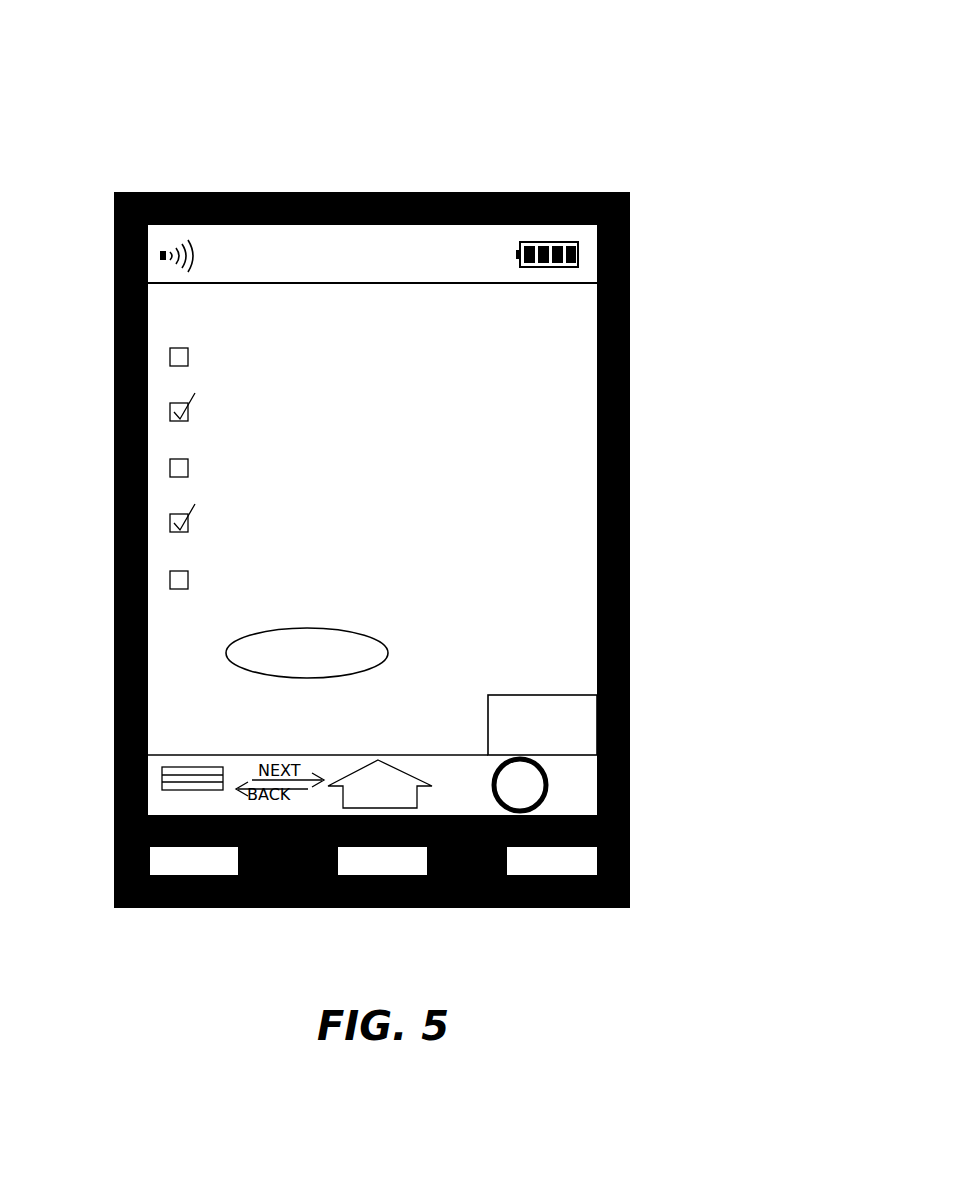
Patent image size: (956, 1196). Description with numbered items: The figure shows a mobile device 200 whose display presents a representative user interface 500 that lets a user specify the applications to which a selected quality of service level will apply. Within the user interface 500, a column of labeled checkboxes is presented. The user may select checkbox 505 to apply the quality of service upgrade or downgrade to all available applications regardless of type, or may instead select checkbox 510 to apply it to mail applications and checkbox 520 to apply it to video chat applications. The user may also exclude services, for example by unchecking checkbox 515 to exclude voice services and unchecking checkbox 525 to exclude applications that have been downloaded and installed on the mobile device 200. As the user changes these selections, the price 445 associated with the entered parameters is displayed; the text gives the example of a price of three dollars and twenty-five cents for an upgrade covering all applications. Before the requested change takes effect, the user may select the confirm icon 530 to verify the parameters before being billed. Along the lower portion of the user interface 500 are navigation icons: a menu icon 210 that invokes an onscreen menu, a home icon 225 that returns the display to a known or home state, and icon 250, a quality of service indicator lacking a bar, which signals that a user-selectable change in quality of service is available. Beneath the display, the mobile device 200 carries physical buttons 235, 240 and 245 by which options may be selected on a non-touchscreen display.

The mobile device 200 is at (648, 126).
The user interface 500 is at (582, 325).
The checkbox 505 is at (170, 363).
The checkbox 510 is at (170, 418).
The checkbox 515 is at (170, 474).
The checkbox 520 is at (170, 529).
The checkbox 525 is at (170, 586).
The confirm icon 530 is at (214, 646).
The menu icon 210 is at (182, 752).
The home icon 225 is at (412, 764).
The price 445 is at (583, 728).
The icon 250 is at (547, 789).
The button 235 is at (178, 870).
The button 240 is at (372, 870).
The button 245 is at (538, 870).